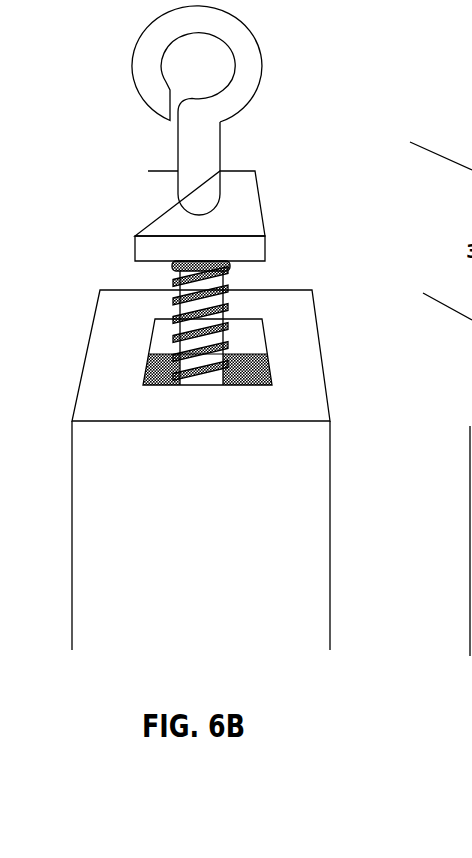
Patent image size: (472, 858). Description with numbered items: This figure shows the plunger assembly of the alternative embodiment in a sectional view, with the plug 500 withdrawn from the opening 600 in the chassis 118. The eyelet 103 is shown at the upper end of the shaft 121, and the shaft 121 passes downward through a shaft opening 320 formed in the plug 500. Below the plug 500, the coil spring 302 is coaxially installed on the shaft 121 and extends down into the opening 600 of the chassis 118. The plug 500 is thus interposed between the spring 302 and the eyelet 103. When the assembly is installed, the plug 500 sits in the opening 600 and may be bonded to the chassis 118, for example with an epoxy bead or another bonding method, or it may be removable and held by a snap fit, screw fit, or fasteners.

The eyelet 103 is at (253, 83).
The shaft opening 320 is at (180, 208).
The plug 500 is at (250, 228).
The shaft 121 is at (180, 273).
The coil spring 302 is at (173, 320).
The opening 600 is at (252, 362).
The chassis 118 is at (217, 541).